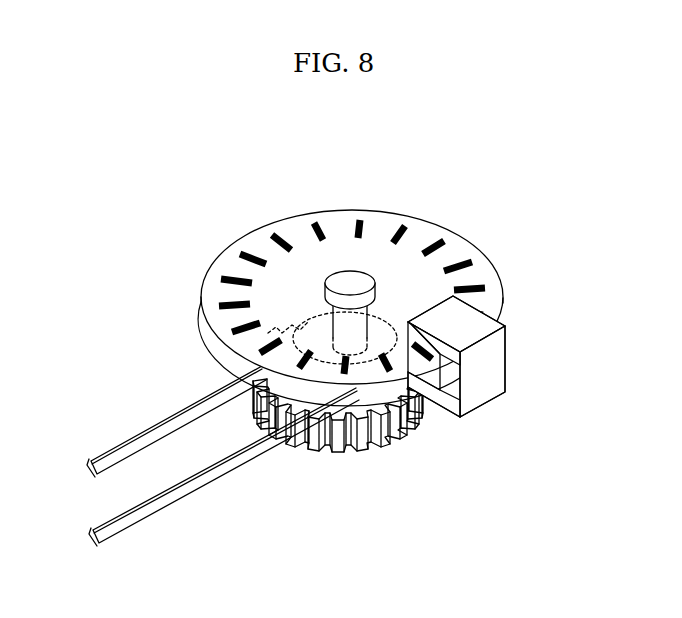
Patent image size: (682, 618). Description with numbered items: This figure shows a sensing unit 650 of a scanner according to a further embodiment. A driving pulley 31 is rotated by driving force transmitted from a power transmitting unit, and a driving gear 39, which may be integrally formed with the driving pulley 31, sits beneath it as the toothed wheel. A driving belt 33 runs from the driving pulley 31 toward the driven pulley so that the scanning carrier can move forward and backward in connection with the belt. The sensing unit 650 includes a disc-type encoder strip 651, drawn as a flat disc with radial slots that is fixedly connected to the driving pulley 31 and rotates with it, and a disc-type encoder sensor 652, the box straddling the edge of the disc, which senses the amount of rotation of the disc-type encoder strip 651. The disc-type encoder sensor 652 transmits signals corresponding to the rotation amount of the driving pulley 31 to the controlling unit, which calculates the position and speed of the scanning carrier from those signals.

The driving pulley 31 is at (379, 343).
The driving belt 33 is at (213, 476).
The driving gear 39 is at (390, 432).
The sensing unit 650 is at (520, 315).
The disc-type encoder strip 651 is at (297, 228).
The disc-type encoder sensor 652 is at (500, 377).